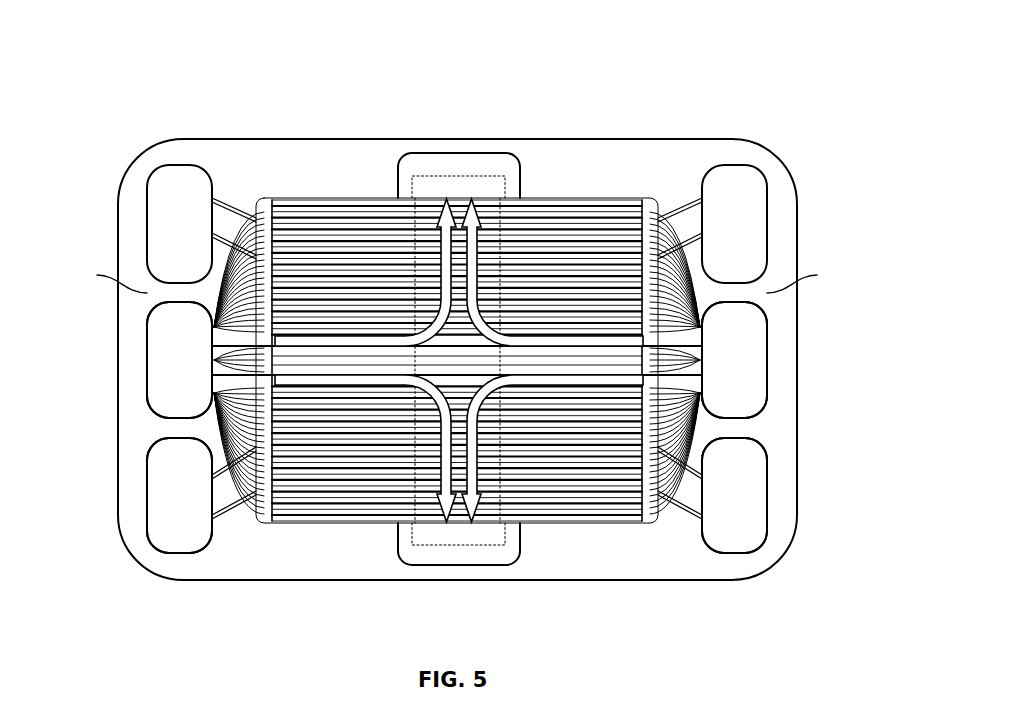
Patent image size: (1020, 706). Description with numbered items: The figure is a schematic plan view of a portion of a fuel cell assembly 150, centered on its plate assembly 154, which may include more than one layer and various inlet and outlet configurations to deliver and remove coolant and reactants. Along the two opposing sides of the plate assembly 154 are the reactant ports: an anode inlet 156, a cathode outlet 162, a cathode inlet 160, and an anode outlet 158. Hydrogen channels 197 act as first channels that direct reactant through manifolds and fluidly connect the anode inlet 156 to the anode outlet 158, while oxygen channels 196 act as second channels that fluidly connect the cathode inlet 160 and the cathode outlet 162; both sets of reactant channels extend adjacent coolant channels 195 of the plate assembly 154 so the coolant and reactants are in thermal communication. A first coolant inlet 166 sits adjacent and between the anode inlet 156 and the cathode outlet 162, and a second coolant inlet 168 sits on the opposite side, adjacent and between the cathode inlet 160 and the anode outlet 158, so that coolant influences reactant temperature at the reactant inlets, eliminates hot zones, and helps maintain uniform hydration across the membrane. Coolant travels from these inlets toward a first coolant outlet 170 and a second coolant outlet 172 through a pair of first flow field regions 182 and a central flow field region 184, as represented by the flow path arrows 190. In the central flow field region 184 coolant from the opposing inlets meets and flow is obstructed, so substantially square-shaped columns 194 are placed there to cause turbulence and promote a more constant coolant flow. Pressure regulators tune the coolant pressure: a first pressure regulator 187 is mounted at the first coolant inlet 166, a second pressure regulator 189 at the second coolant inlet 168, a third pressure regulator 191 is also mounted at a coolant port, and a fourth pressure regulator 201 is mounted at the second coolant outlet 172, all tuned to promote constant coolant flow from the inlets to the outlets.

The fuel cell assembly 150 is at (626, 60).
The plate assembly 154 is at (674, 105).
The anode inlet 156 is at (147, 221).
The anode outlet 158 is at (767, 497).
The cathode inlet 160 is at (767, 221).
The cathode outlet 162 is at (147, 497).
The first coolant inlet 166 is at (147, 353).
The second coolant inlet 168 is at (767, 353).
The first coolant outlet 170 is at (458, 153).
The second coolant outlet 172 is at (456, 565).
The first flow field regions 182 is at (290, 168).
The central flow field region 184 is at (484, 228).
The first pressure regulator 187 is at (101, 279).
The second pressure regulator 189 is at (814, 279).
The flow path arrows 190 is at (312, 340).
The third pressure regulator 191 is at (480, 177).
The columns 194 is at (440, 222).
The coolant channels 195 is at (347, 222).
The oxygen channels 196 is at (250, 203).
The hydrogen channels 197 is at (238, 215).
The fourth pressure regulator 201 is at (490, 547).